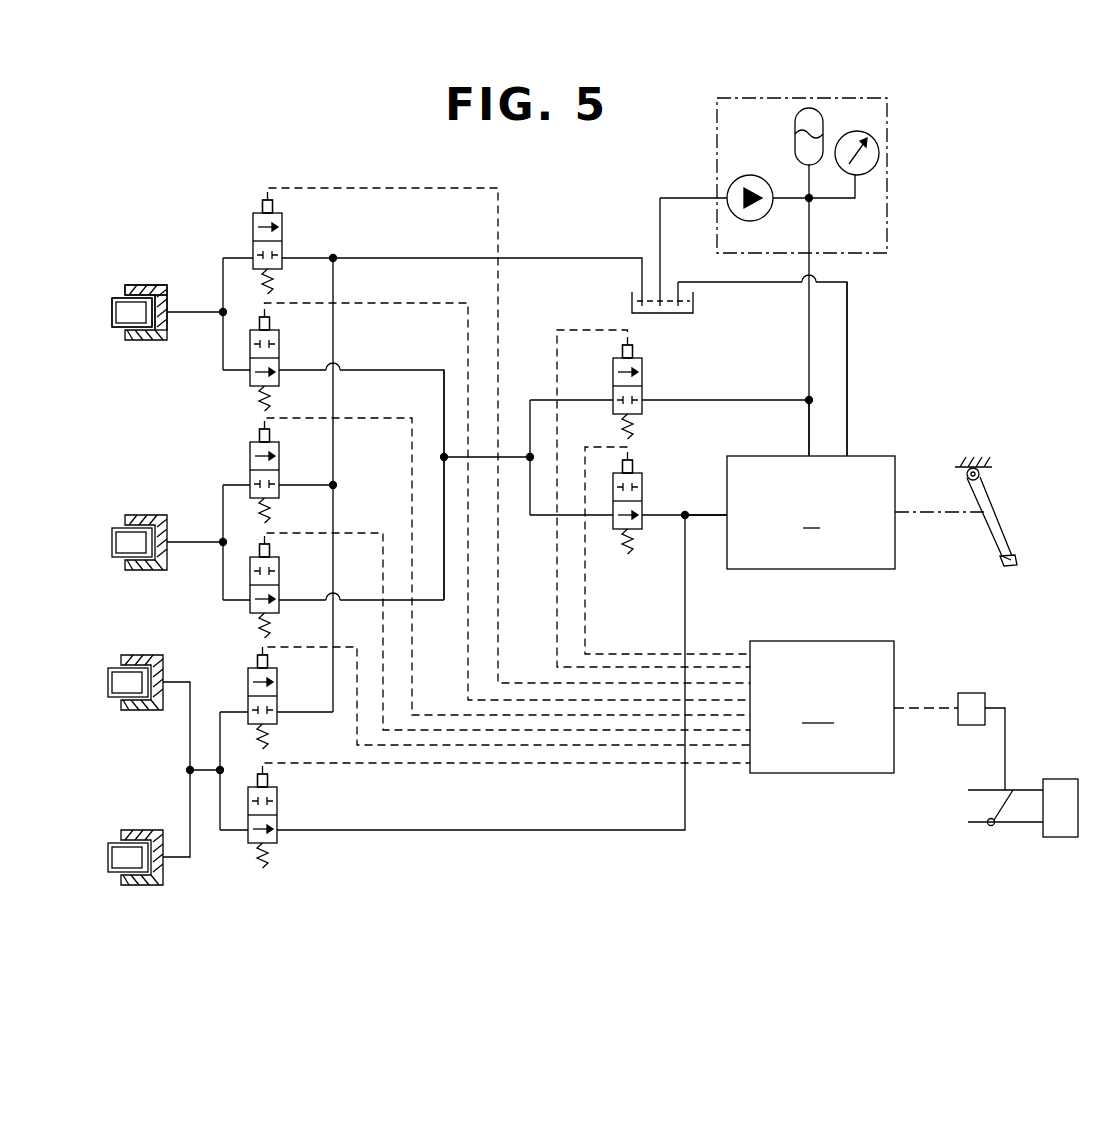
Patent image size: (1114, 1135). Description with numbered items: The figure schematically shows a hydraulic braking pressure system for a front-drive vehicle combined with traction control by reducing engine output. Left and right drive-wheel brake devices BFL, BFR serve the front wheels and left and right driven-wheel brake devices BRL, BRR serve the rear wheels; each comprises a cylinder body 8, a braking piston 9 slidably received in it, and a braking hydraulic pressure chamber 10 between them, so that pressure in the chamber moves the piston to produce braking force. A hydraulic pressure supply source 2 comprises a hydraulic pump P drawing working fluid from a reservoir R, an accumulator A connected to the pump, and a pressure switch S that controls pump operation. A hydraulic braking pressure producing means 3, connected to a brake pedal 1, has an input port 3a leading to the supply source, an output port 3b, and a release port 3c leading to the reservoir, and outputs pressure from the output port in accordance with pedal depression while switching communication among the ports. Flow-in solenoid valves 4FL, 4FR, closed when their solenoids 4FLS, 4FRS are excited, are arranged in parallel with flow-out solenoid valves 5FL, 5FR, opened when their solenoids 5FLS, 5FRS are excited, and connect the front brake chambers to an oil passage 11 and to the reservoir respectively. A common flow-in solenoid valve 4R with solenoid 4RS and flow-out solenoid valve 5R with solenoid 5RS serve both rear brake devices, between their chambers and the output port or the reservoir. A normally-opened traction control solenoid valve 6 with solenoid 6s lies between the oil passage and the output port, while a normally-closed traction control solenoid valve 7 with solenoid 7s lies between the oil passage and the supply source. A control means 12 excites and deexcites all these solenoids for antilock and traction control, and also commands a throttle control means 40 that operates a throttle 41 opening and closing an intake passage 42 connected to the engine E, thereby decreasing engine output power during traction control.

The brake pedal 1 is at (1015, 560).
The hydraulic pressure supply source 2 is at (827, 175).
The hydraulic braking pressure producing means 3 is at (856, 512).
The input port 3a is at (802, 455).
The output port 3b is at (727, 513).
The release port 3c is at (849, 455).
The flow-in solenoid valve 4FL is at (256, 385).
The solenoid 4FLS is at (270, 322).
The flow-in solenoid valve 4FR is at (252, 612).
The solenoid 4FRS is at (270, 550).
The flow-in solenoid valve 4R is at (277, 845).
The solenoid 4RS is at (268, 780).
The flow-out solenoid valve 5FL is at (253, 230).
The solenoid 5FLS is at (272, 206).
The flow-out solenoid valve 5FR is at (250, 464).
The solenoid 5FRS is at (270, 434).
The flow-out solenoid valve 5R is at (277, 725).
The solenoid 5RS is at (268, 662).
The normally-opened type traction control solenoid valve 6 is at (642, 525).
The solenoid 6s is at (633, 466).
The normally-closed type traction control solenoid valve 7 is at (642, 380).
The solenoid 7s is at (622, 352).
The cylinder body 8 is at (146, 285).
The braking piston 9 is at (114, 330).
The braking hydraulic pressure chamber 10 is at (166, 302).
The oil passage 11 is at (444, 397).
The control means 12 is at (854, 707).
The throttle control means 40 is at (985, 700).
The throttle 41 is at (995, 826).
The intake passage 42 is at (1028, 790).
The left drive-wheel brake device BFL is at (121, 290).
The right drive-wheel brake device BFR is at (127, 512).
The left driven-wheel brake device BRL is at (122, 655).
The right driven-wheel brake device BRR is at (103, 835).
The hydraulic pump P is at (749, 175).
The accumulator A is at (823, 118).
The pressure switch S is at (860, 175).
The reservoir R is at (632, 300).
The engine E is at (1060, 808).